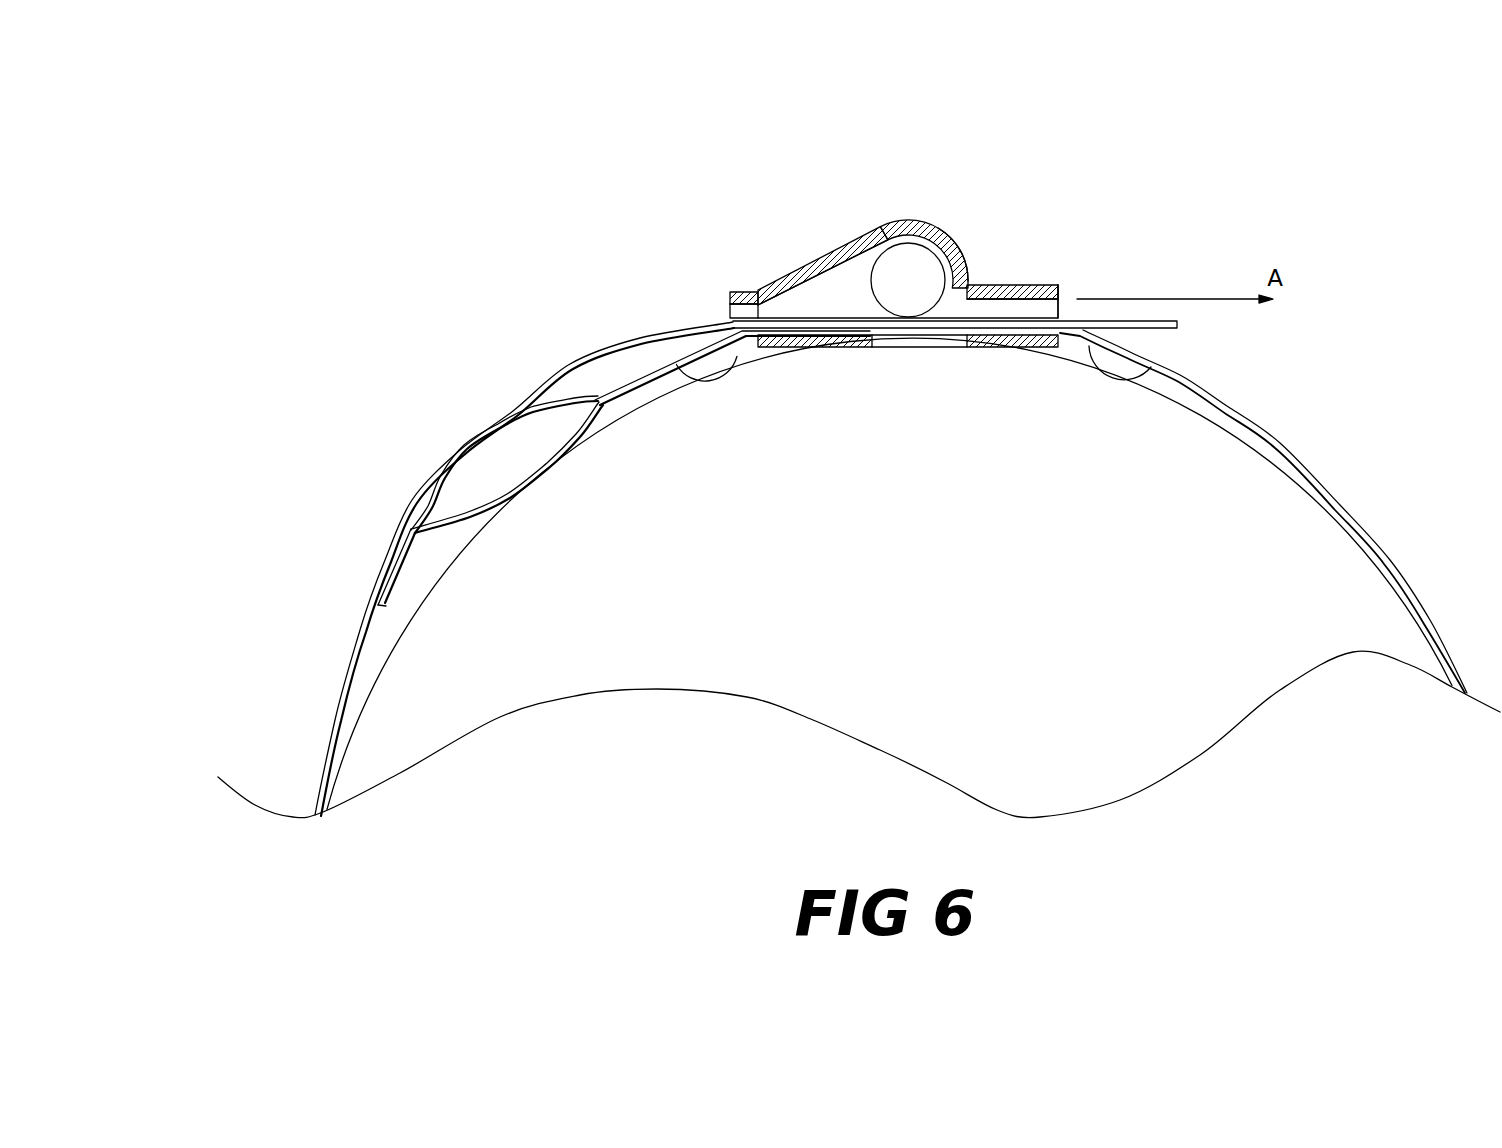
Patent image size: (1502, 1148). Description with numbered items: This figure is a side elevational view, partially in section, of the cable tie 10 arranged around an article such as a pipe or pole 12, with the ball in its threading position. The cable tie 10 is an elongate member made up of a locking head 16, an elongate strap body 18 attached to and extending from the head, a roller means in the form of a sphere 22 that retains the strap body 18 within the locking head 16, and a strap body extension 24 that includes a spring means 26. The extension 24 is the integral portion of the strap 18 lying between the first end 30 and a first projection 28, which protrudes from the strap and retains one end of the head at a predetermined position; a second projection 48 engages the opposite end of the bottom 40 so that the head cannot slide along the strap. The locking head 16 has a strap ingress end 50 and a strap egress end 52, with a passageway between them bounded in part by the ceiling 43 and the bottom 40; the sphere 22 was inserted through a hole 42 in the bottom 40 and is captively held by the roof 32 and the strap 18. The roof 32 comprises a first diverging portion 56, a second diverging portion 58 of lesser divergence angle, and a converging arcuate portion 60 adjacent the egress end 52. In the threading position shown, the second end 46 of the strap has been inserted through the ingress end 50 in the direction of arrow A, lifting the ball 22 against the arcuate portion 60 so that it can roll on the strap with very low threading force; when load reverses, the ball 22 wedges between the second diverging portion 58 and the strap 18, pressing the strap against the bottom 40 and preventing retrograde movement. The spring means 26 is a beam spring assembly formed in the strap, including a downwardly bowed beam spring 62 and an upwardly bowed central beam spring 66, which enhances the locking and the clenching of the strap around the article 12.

The cable tie 10 is at (881, 281).
The pipe or pole 12 is at (893, 600).
The locking head 16 is at (987, 252).
The strap body 18 is at (531, 372).
The sphere 22 is at (893, 294).
The strap body extension 24 is at (641, 400).
The spring means 26 is at (428, 556).
The first projection 28 is at (722, 362).
The first end 30 is at (376, 620).
The roof 32 is at (921, 215).
The bottom 40 is at (830, 346).
The hole 42 is at (920, 348).
The ceiling 43 is at (737, 291).
The second end 46 is at (1178, 323).
The second projection 48 is at (1113, 379).
The strap ingress end 50 is at (730, 303).
The strap egress end 52 is at (1062, 287).
The first diverging portion 56 is at (762, 291).
The second diverging portion 58 is at (845, 244).
The arcuate portion 60 is at (962, 243).
The first downwardly bowed beam spring 62 is at (540, 478).
The central beam spring 66 is at (468, 446).